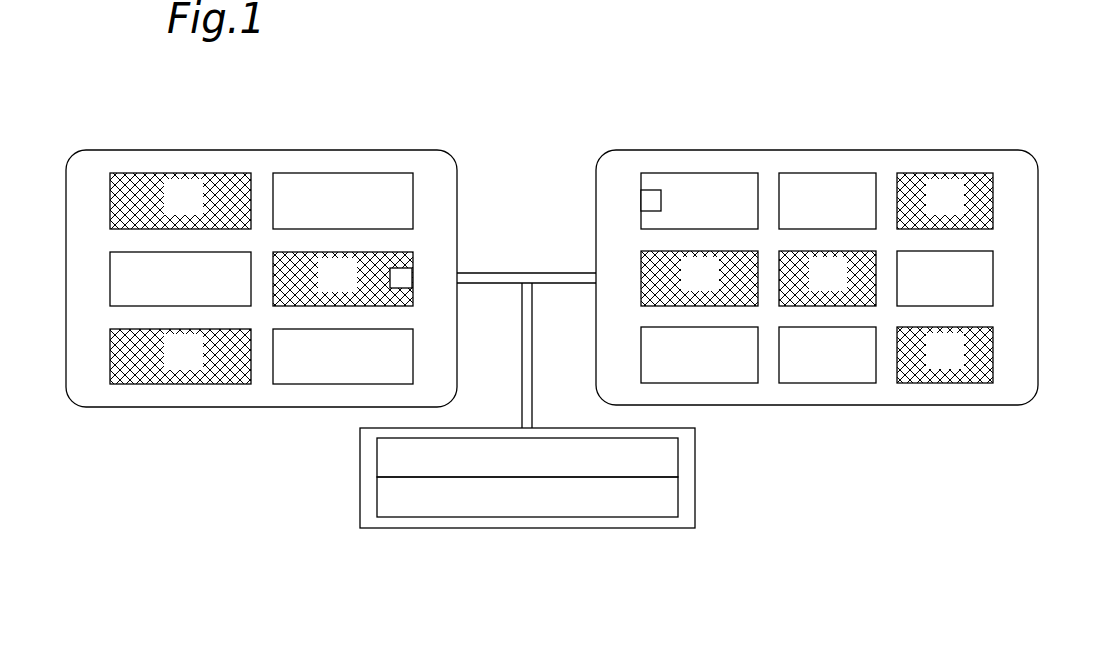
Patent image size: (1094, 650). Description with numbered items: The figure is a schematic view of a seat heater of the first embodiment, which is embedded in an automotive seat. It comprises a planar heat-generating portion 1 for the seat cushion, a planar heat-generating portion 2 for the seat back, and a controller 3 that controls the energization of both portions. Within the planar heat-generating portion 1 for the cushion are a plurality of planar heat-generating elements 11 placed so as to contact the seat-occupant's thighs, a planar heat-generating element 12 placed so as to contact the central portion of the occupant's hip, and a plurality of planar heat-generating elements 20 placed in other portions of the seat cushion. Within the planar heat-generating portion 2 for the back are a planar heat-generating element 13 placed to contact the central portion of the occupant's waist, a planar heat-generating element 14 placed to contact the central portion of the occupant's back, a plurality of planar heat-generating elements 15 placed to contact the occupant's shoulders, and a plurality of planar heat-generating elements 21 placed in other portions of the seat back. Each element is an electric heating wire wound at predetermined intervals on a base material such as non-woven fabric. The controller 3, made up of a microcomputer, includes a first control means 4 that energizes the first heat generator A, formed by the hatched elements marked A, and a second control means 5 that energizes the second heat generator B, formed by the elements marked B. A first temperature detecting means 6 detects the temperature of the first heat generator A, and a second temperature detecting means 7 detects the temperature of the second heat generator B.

The planar heat-generating portion for a cushion 1 is at (300, 407).
The planar heat-generating portion for a back 2 is at (820, 405).
The controller 3 is at (615, 528).
The first control means 4 is at (678, 455).
The second control means 5 is at (678, 497).
The first temperature detecting means 6 is at (412, 278).
The second temperature detecting means 7 is at (645, 198).
The planar heat-generating elements 11 is at (135, 329).
The planar heat-generating element 12 is at (298, 306).
The planar heat-generating element 13 is at (638, 266).
The planar heat-generating element 14 is at (862, 306).
The planar heat-generating elements 15 is at (980, 327).
The planar heat-generating elements 20 is at (361, 329).
The planar heat-generating elements 21 is at (723, 327).